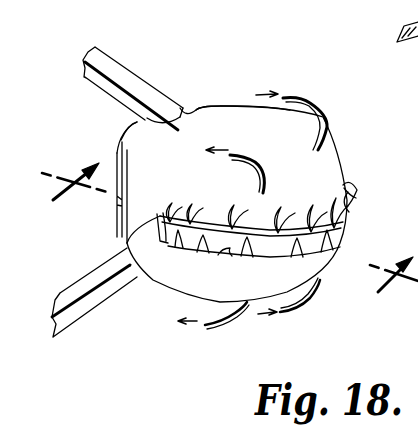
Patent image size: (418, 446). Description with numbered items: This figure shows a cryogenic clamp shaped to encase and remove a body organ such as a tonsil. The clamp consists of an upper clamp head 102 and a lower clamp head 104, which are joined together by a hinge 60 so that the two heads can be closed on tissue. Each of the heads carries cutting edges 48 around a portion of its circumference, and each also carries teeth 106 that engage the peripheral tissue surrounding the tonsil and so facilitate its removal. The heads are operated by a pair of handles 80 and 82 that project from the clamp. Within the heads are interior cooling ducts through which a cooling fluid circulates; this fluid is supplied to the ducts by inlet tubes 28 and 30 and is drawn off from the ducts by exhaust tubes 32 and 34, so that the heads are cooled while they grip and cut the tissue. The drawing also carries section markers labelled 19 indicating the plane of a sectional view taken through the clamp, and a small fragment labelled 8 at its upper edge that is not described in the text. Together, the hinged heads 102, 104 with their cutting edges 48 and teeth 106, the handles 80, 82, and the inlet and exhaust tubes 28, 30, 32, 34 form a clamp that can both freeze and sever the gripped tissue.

The handle 80 is at (140, 90).
The handle 82 is at (80, 307).
The upper clamp head 102 is at (220, 118).
The lower clamp head 104 is at (137, 238).
The inlet tube 28 is at (322, 115).
The inlet tube 30 is at (300, 307).
The exhaust tube 32 is at (252, 170).
The exhaust tube 34 is at (225, 323).
The cutting edge 48 is at (173, 218).
The hinge 60 is at (115, 207).
The teeth 106 is at (347, 195).
The section line 19 is at (220, 238).
The adjacent part 8 is at (407, 59).